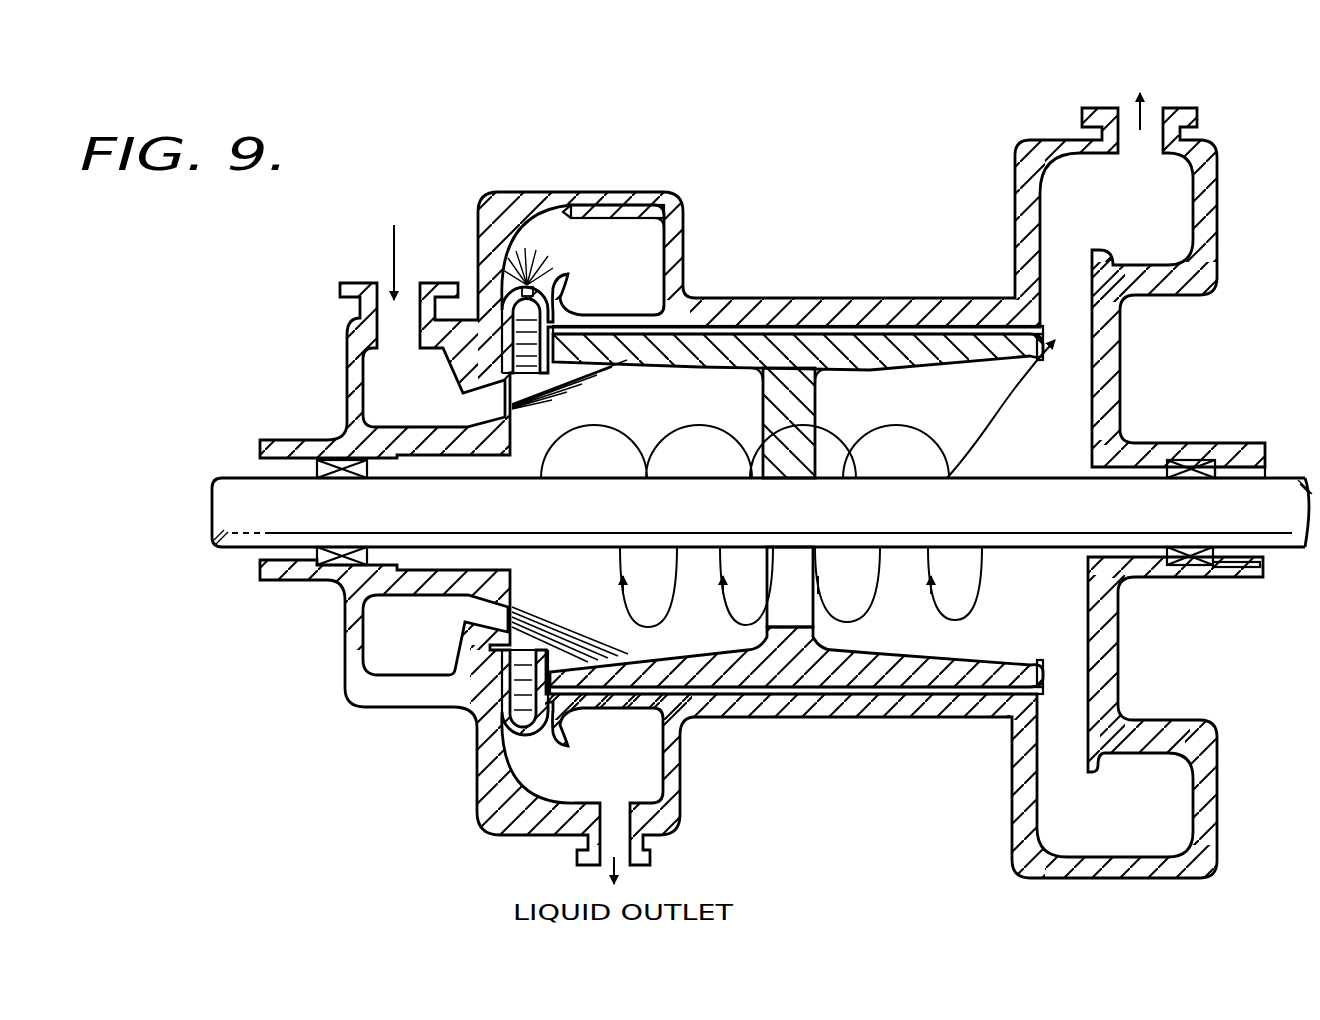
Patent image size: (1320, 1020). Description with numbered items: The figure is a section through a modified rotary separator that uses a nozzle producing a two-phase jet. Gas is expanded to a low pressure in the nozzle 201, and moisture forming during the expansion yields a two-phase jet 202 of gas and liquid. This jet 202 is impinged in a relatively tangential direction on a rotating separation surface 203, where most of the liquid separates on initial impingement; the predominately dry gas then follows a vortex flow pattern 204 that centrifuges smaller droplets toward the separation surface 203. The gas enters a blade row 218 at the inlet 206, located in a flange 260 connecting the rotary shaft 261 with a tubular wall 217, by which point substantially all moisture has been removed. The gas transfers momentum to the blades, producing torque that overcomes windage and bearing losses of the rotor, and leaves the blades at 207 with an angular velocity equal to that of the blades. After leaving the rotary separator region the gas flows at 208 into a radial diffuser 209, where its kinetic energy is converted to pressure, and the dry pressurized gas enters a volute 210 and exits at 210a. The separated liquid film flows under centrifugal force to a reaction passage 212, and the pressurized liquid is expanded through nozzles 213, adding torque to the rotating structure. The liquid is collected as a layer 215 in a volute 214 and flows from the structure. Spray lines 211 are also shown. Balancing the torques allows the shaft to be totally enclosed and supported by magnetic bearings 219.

The nozzle 201 is at (477, 414).
The two-phase jet 202 is at (559, 388).
The rotating separation surface 203 is at (720, 367).
The vortex flow pattern 204 is at (620, 606).
The inlet 206 is at (757, 580).
The blade exit 207 is at (843, 592).
The gas flow 208 is at (1043, 372).
The radial diffuser 209 is at (1060, 267).
The volute 210 is at (1163, 199).
The gas exit 210a is at (1120, 120).
The spray 211 is at (627, 368).
The reaction passage 212 is at (508, 345).
The nozzles 213 is at (514, 205).
The volute 214 is at (647, 253).
The liquid layer 215 is at (611, 217).
The tubular wall 217 is at (952, 340).
The blade row 218 is at (787, 607).
The magnetic bearings 219 is at (333, 562).
The flange 260 is at (797, 419).
The rotary shaft 261 is at (762, 512).